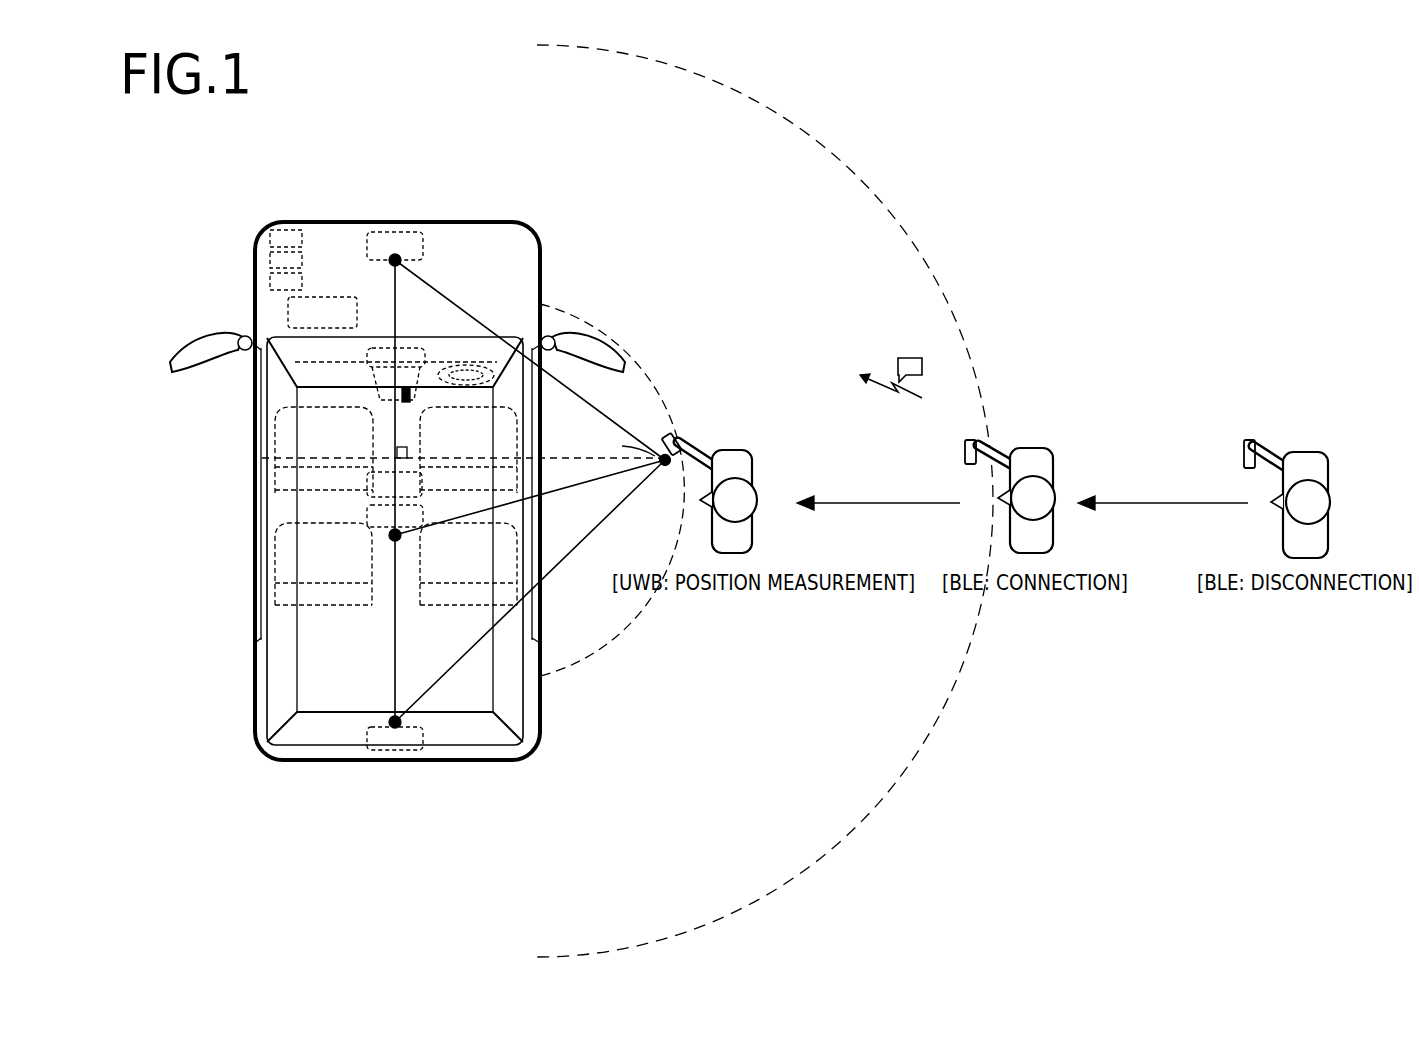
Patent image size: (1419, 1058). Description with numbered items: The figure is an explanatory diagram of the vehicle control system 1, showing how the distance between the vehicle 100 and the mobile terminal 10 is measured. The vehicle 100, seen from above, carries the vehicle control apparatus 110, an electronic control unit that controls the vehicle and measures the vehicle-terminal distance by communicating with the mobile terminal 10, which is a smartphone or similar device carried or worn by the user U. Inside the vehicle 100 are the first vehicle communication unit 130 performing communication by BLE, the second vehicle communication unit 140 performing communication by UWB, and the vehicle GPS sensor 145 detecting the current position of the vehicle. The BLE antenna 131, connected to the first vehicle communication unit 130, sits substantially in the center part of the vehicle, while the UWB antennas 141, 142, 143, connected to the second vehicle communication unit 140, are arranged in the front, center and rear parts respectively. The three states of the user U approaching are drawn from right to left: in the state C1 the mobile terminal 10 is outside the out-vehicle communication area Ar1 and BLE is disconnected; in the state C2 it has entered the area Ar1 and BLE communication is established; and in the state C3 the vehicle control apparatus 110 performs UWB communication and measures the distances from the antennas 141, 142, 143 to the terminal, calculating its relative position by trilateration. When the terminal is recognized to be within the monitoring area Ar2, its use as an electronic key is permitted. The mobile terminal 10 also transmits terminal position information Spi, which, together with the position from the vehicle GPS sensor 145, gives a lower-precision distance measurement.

The vehicle control system 1 is at (636, 178).
The vehicle 100 is at (463, 222).
The vehicle control apparatus 110 is at (288, 312).
The first vehicle communication unit 130 is at (270, 240).
The second vehicle communication unit 140 is at (270, 262).
The vehicle GPS sensor 145 is at (271, 283).
The BLE antenna 131 is at (375, 471).
The UWB antenna 141 is at (426, 246).
The UWB antenna 142 is at (366, 513).
The UWB antenna 143 is at (396, 760).
The mobile terminal 10 is at (1248, 458).
The user U is at (1303, 451).
The out-vehicle communication area Ar1 is at (912, 243).
The monitoring area Ar2 is at (712, 342).
The terminal position information Spi is at (893, 365).
The state outside the out-vehicle communication area C1 is at (1314, 609).
The state inside the out-vehicle communication area C2 is at (1036, 609).
The state of UWB position measurement C3 is at (731, 607).